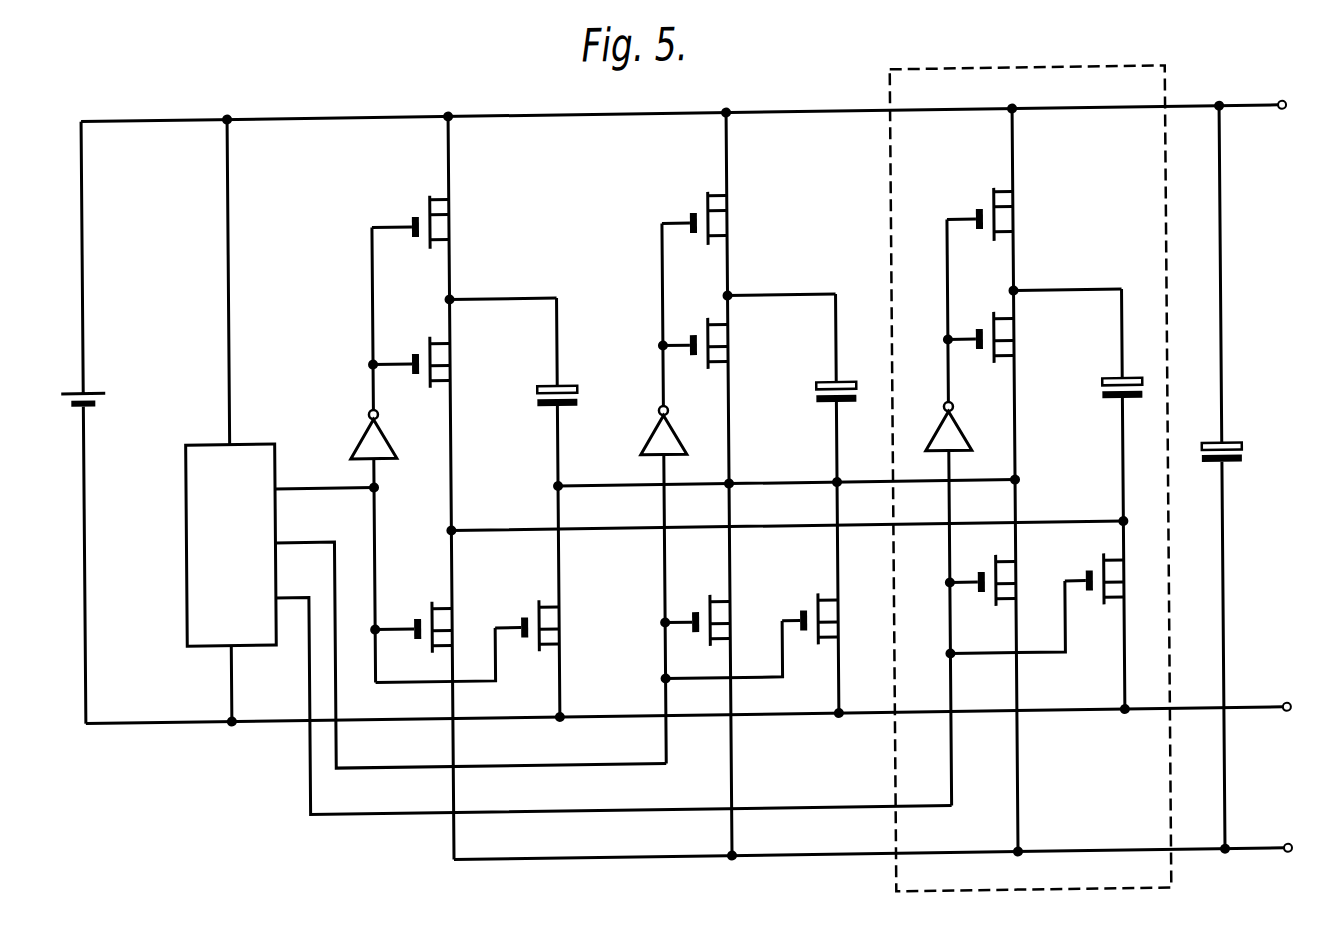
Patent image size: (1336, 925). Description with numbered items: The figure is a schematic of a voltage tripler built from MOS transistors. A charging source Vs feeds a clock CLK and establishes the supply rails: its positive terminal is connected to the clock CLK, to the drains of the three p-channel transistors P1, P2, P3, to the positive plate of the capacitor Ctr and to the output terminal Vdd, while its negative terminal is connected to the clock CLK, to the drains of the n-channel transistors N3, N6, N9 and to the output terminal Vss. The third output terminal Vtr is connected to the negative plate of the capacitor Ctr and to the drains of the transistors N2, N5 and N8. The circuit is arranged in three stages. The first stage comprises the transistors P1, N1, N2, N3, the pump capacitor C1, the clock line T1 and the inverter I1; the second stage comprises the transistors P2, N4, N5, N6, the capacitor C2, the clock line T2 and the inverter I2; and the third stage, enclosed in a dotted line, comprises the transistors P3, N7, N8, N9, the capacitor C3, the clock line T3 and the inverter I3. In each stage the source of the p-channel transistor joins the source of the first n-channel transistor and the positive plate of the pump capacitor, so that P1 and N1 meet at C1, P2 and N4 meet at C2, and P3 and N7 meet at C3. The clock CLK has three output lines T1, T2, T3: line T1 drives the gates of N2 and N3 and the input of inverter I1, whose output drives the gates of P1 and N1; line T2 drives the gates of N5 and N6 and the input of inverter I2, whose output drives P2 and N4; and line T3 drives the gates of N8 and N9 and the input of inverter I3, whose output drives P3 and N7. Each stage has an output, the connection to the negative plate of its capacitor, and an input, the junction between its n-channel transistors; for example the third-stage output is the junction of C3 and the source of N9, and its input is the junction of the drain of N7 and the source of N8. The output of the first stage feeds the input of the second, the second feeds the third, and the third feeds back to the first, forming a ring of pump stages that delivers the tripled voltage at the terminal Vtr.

The output terminal Vdd is at (706, 112).
The output terminal Vss is at (708, 714).
The output terminal Vtr is at (890, 852).
The charging source Vs is at (92, 385).
The clock CLK is at (186, 511).
The output line T1 is at (321, 480).
The output line T2 is at (321, 537).
The output line T3 is at (310, 627).
The p-channel MOS transistor P1 is at (445, 226).
The p-channel MOS transistor P2 is at (723, 227).
The p-channel MOS transistor P3 is at (1010, 224).
The n-channel MOS transistor N1 is at (453, 350).
The n-channel MOS transistor N2 is at (424, 603).
The n-channel MOS transistor N3 is at (529, 604).
The n-channel MOS transistor N4 is at (727, 335).
The n-channel MOS transistor N5 is at (703, 603).
The n-channel MOS transistor N6 is at (810, 604).
The n-channel MOS transistor N7 is at (1014, 334).
The n-channel MOS transistor N8 is at (985, 569).
The n-channel MOS transistor N9 is at (1098, 567).
The pump capacitor C1 is at (547, 408).
The pump capacitor C2 is at (828, 409).
The pump capacitor C3 is at (1115, 409).
The inverter I1 is at (364, 430).
The inverter I2 is at (654, 430).
The inverter I3 is at (939, 430).
The capacitor Ctr is at (1226, 449).